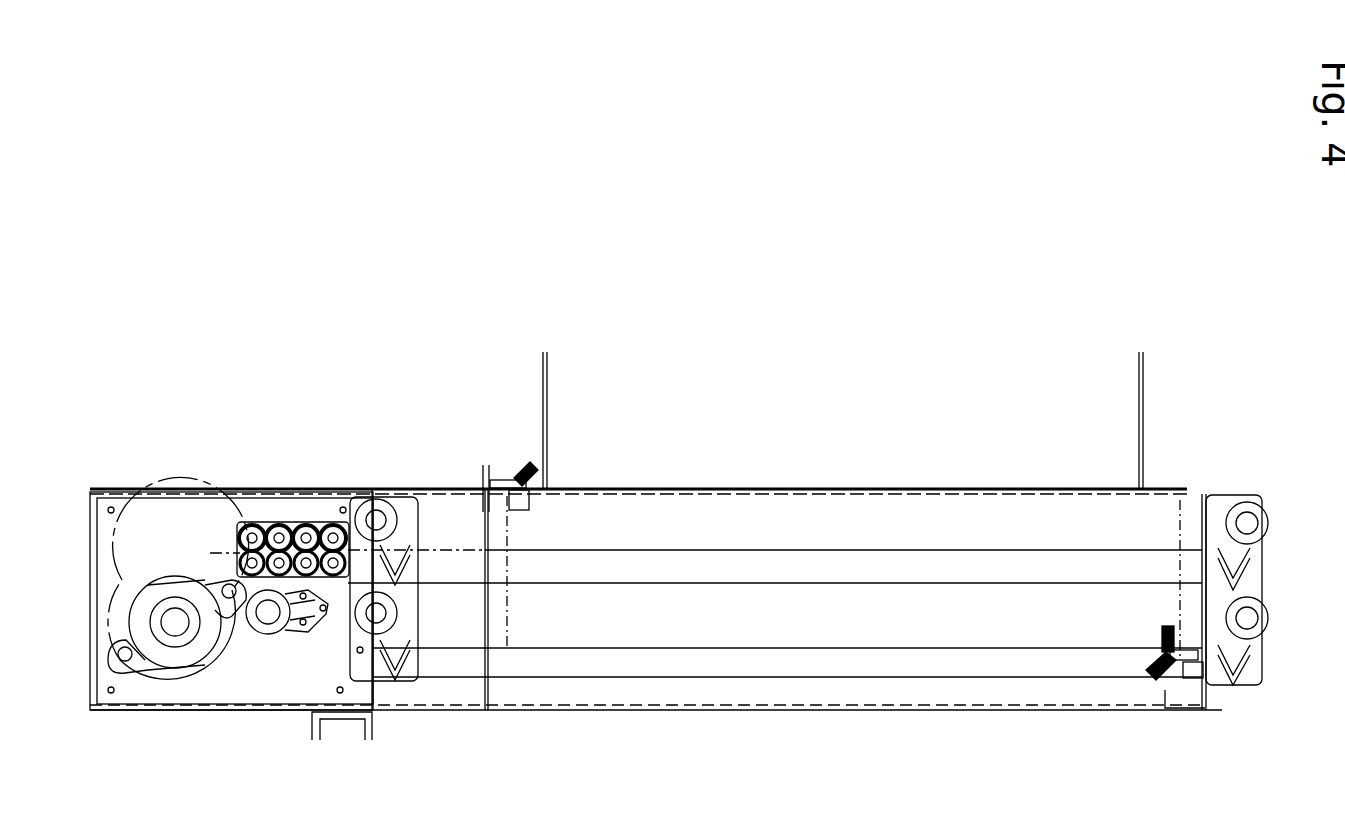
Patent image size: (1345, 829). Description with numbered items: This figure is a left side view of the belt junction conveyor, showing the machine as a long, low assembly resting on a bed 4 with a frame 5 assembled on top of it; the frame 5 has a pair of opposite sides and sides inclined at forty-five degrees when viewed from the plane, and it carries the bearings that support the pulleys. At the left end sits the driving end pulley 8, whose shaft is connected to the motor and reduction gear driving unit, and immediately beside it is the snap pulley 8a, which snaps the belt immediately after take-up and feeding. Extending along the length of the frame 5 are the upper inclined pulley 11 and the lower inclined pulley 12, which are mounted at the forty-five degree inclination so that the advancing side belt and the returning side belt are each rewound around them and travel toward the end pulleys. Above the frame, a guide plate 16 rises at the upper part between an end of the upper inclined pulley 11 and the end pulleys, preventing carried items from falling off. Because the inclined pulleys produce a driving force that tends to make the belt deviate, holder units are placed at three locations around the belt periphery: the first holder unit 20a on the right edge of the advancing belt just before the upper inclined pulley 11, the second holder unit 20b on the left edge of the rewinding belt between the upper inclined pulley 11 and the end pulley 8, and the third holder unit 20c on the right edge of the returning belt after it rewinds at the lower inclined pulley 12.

The bed 4 is at (972, 704).
The frame 5 is at (1188, 496).
The end pulley 8 is at (170, 560).
The snap pulley 8a is at (263, 636).
The upper inclined pulley 11 is at (712, 512).
The lower inclined pulley 12 is at (724, 640).
The guide plate 16 is at (543, 375).
The first holder unit 20a is at (518, 476).
The second holder unit 20b is at (283, 528).
The third holder unit 20c is at (1168, 676).